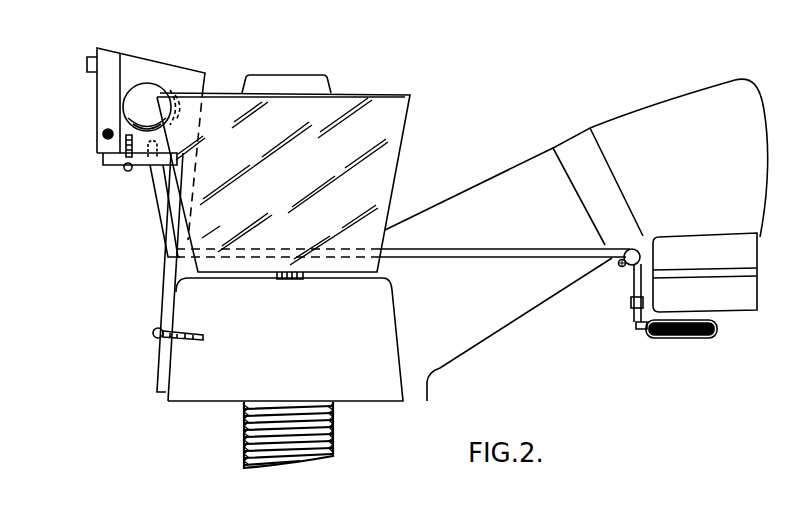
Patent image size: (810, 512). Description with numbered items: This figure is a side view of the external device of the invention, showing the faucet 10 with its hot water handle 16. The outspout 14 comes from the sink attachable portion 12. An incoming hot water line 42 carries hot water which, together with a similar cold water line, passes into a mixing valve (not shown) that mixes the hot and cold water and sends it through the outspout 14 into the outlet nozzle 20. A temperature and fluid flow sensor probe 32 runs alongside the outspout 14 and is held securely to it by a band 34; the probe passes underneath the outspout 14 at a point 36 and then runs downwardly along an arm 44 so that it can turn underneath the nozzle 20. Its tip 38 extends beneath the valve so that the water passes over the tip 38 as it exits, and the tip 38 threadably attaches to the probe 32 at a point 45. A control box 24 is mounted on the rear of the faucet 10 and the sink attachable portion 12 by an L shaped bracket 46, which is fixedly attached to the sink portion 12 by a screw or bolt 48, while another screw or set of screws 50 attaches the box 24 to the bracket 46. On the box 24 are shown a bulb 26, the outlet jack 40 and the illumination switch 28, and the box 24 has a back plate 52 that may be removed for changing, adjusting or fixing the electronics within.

The faucet 10 is at (475, 183).
The sink attachable portion 12 is at (197, 396).
The outspout 14 is at (647, 112).
The hot water handle 16 is at (400, 110).
The outlet nozzle 20 is at (757, 257).
The control box 24 is at (206, 74).
The bulb 26 is at (125, 104).
The illumination switch 28 is at (87, 62).
The temperature and fluid flow sensor probe 32 is at (478, 255).
The band 34 is at (610, 192).
The point 36 is at (628, 268).
The tip 38 is at (697, 339).
The outlet jack 40 is at (103, 136).
The incoming hot water line 42 is at (335, 442).
The arm 44 is at (635, 327).
The point 45 is at (631, 306).
The L shaped bracket 46 is at (172, 285).
The screw or bolt 48 is at (154, 335).
The screw or set of screws 50 is at (126, 171).
The back plate 52 is at (108, 50).